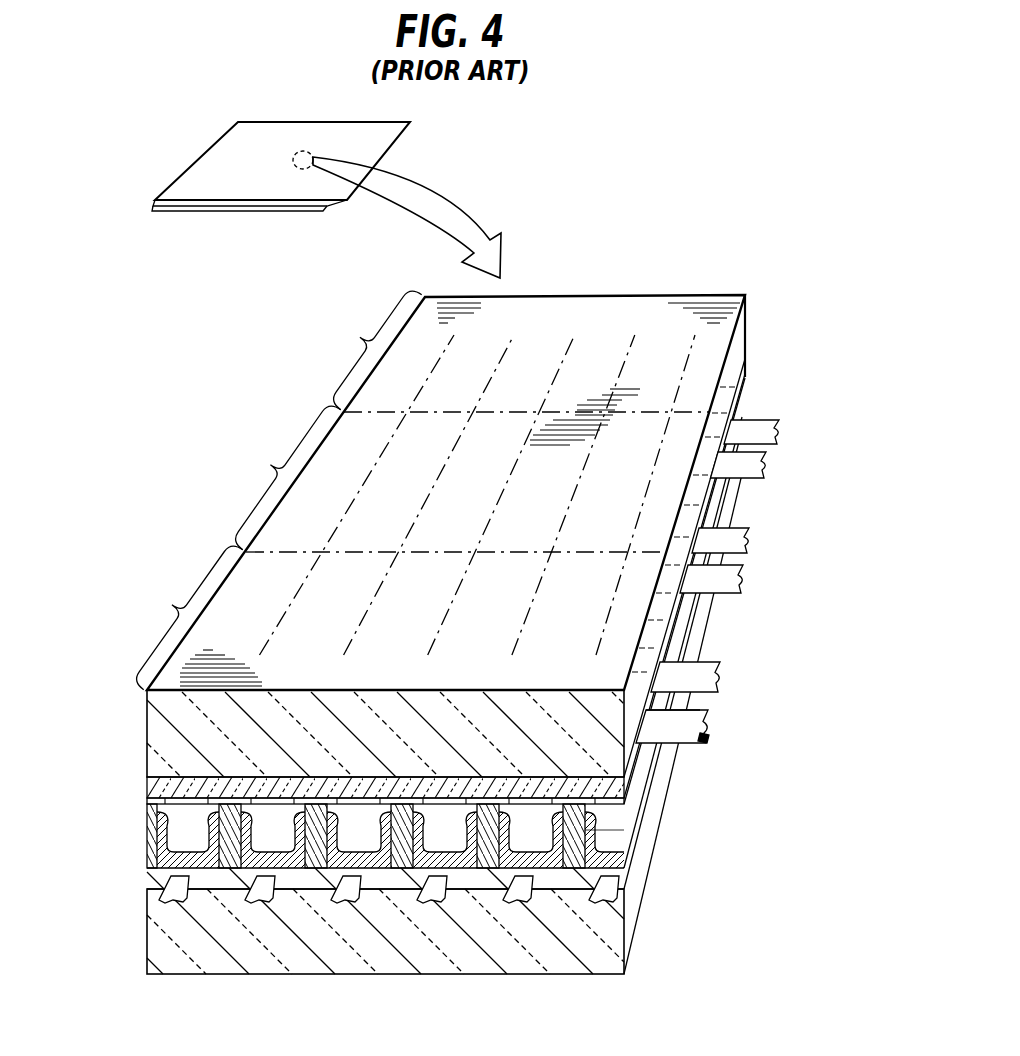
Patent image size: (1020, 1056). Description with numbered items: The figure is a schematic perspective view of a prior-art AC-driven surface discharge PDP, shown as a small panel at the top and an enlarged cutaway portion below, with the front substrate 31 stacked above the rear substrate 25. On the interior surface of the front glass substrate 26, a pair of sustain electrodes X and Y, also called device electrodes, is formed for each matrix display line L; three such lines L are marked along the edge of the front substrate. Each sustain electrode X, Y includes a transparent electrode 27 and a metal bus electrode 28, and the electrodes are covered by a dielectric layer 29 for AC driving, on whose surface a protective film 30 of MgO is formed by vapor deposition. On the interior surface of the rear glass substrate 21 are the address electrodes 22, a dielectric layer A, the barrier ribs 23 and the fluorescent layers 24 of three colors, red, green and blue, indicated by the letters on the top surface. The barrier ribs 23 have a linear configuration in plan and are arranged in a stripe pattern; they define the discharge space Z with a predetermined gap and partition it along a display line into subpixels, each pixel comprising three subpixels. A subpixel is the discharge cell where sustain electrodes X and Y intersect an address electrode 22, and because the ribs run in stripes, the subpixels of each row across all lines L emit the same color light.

The rear glass substrate 21 is at (163, 931).
The address electrode 22 is at (433, 954).
The barrier rib 23 is at (388, 918).
The fluorescent layer 24 is at (390, 919).
The rear substrate 25 is at (726, 897).
The front glass substrate 26 is at (163, 742).
The transparent electrode 27 is at (670, 738).
The bus electrode 28 is at (707, 748).
The dielectric layer 29 is at (163, 782).
The protective film 30 is at (150, 804).
The front substrate 31 is at (214, 447).
The dielectric layer A is at (163, 876).
The sustain electrode X is at (714, 597).
The sustain electrode Y is at (730, 539).
The discharge space Z is at (618, 828).
The matrix display line L is at (279, 490).
The plasma display panel PDP is at (199, 224).